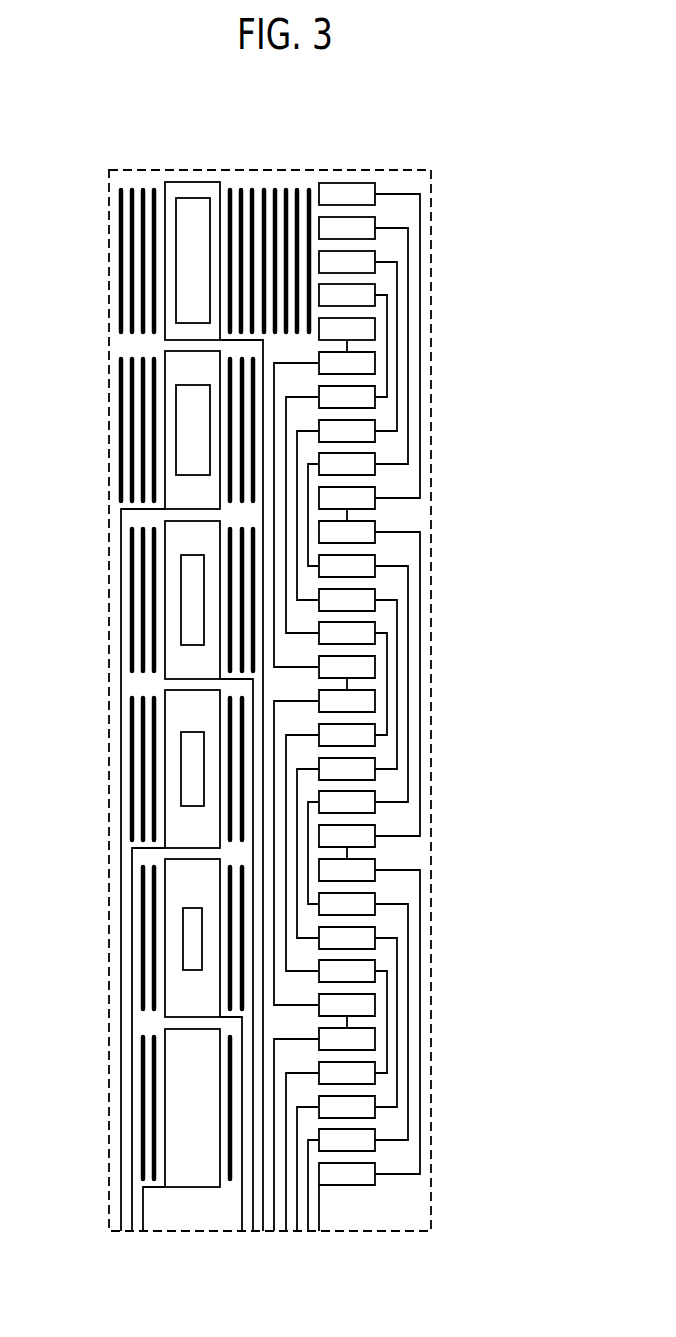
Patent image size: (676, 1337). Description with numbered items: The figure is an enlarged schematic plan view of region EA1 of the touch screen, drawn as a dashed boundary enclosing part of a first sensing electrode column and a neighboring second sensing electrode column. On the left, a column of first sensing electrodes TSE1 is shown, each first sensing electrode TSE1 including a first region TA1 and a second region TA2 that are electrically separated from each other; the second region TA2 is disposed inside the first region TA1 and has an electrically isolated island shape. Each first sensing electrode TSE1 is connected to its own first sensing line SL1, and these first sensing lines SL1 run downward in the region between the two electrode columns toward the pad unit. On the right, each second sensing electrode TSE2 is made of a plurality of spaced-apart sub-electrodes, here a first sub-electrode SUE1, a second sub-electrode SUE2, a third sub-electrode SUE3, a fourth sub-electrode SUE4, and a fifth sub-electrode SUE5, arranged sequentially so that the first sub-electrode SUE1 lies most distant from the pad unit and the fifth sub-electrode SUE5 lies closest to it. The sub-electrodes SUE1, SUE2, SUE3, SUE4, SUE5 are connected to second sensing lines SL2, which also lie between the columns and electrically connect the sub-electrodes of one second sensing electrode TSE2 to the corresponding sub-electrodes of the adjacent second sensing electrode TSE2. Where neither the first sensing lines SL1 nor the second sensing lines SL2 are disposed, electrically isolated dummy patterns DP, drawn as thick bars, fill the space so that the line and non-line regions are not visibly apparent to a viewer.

The region EA1 is at (409, 162).
The dummy pattern DP is at (121, 263).
The first sensing electrode TSE1 is at (206, 210).
The first region TA1 is at (178, 193).
The second region TA2 is at (200, 203).
The first sensing line SL1 is at (121, 560).
The second sensing electrode TSE2 is at (446, 258).
The first sub-electrode SUE1 is at (368, 191).
The second sub-electrode SUE2 is at (368, 225).
The third sub-electrode SUE3 is at (368, 259).
The fourth sub-electrode SUE4 is at (368, 292).
The fifth sub-electrode SUE5 is at (413, 329).
The second sensing line SL2 is at (420, 475).